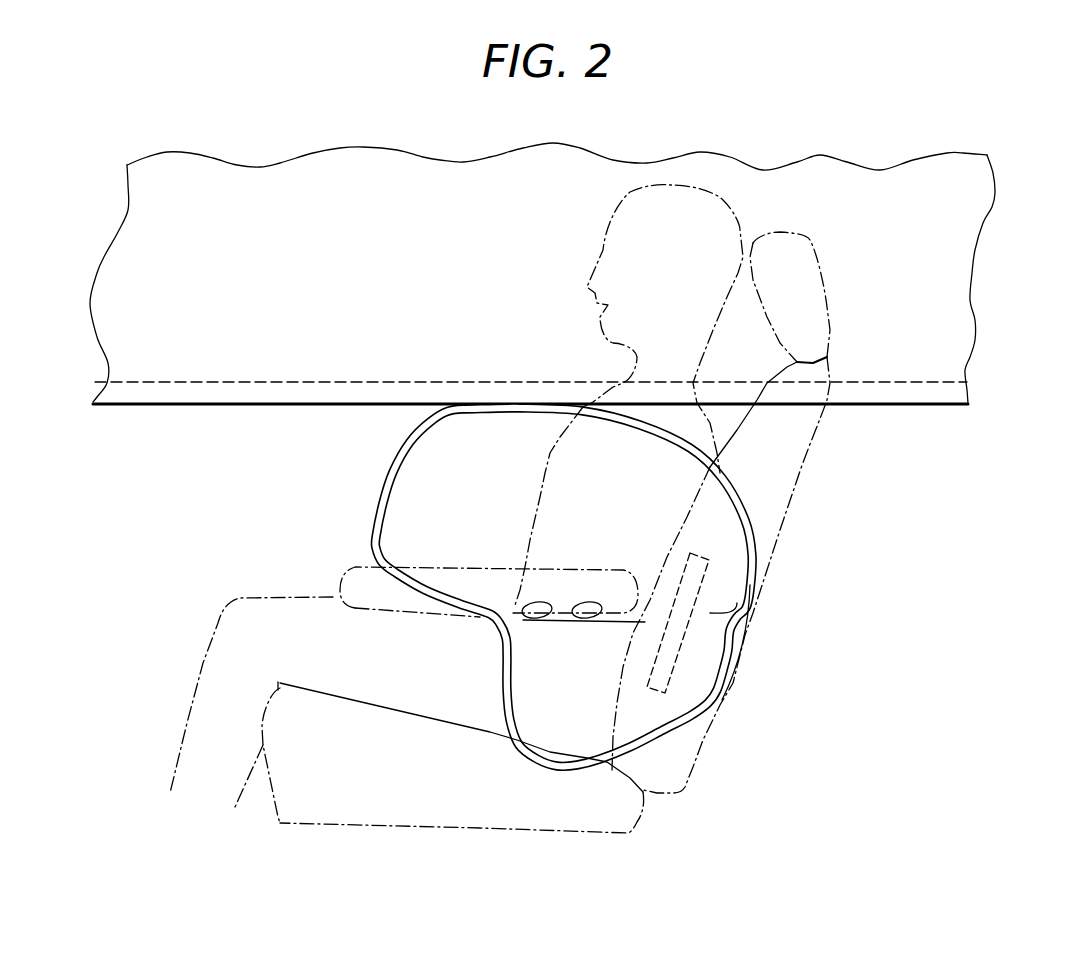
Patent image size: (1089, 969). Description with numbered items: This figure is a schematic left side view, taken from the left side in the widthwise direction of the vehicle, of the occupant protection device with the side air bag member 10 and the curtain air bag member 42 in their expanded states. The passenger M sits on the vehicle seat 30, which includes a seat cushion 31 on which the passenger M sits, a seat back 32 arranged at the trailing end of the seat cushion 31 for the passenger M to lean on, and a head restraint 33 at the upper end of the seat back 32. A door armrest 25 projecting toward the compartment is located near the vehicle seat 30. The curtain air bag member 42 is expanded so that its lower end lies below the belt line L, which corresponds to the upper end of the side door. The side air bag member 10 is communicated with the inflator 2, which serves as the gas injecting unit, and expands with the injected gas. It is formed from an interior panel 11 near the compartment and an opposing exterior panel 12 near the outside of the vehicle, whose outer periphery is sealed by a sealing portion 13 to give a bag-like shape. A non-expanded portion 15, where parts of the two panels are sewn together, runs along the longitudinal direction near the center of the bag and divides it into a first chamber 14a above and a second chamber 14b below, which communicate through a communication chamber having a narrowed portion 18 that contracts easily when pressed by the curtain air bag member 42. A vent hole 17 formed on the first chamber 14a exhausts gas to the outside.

The inflator 2 is at (688, 593).
The side air bag member 10 is at (514, 485).
The interior panel 11 is at (463, 450).
The exterior panel 12 is at (525, 447).
The sealing portion 13 is at (383, 503).
The first chamber 14a is at (482, 433).
The second chamber 14b is at (545, 708).
The non-expanded portion 15 is at (645, 615).
The vent hole 17 is at (587, 602).
The narrowed portion 18 is at (704, 538).
The door armrest 25 is at (365, 573).
The vehicle seat 30 is at (627, 532).
The seat cushion 31 is at (580, 805).
The seat back 32 is at (787, 487).
The head restraint 33 is at (808, 313).
The curtain air bag member 42 is at (957, 210).
The belt line L is at (965, 370).
The passenger M is at (705, 182).